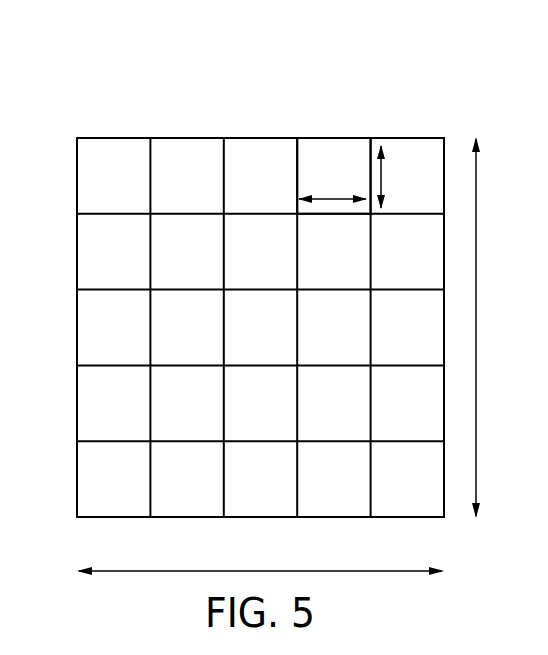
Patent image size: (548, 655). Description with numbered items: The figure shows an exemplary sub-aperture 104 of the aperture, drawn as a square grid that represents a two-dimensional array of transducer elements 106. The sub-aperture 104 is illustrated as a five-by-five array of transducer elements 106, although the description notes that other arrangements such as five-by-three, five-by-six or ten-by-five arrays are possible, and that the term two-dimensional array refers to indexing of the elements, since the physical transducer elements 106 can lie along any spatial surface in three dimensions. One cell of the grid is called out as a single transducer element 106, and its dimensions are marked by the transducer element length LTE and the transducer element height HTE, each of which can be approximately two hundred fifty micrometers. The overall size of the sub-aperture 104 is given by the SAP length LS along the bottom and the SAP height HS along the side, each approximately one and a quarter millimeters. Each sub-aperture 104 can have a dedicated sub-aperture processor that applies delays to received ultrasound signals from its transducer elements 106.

The sub-aperture 104 is at (176, 90).
The transducer element 106 is at (352, 148).
The transducer element length LTE is at (333, 197).
The transducer element height HTE is at (383, 189).
The SAP height HS is at (496, 327).
The SAP length LS is at (260, 551).